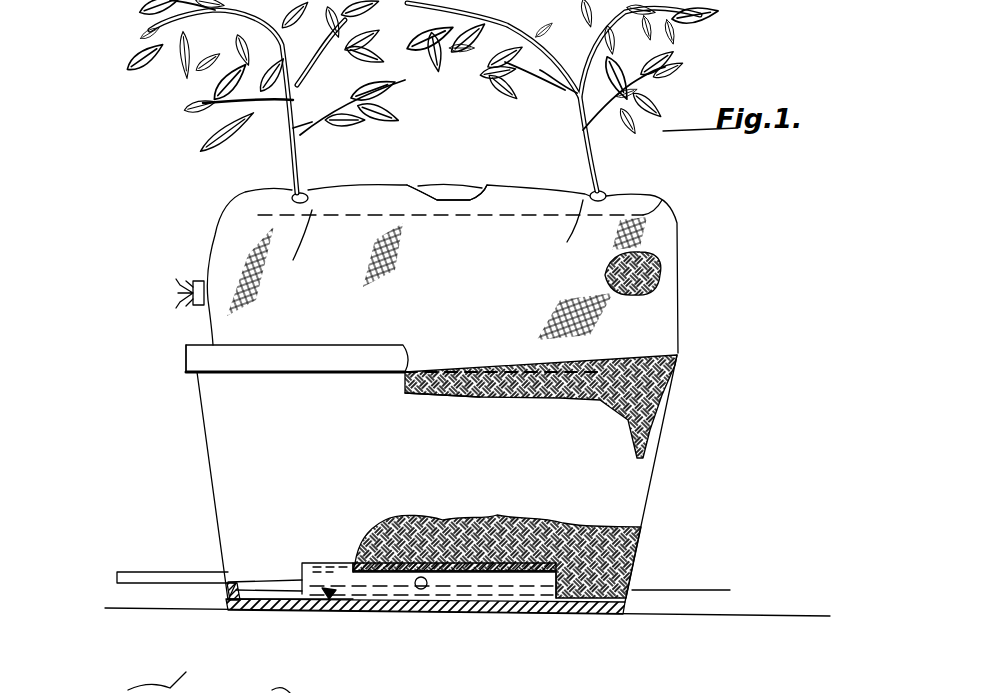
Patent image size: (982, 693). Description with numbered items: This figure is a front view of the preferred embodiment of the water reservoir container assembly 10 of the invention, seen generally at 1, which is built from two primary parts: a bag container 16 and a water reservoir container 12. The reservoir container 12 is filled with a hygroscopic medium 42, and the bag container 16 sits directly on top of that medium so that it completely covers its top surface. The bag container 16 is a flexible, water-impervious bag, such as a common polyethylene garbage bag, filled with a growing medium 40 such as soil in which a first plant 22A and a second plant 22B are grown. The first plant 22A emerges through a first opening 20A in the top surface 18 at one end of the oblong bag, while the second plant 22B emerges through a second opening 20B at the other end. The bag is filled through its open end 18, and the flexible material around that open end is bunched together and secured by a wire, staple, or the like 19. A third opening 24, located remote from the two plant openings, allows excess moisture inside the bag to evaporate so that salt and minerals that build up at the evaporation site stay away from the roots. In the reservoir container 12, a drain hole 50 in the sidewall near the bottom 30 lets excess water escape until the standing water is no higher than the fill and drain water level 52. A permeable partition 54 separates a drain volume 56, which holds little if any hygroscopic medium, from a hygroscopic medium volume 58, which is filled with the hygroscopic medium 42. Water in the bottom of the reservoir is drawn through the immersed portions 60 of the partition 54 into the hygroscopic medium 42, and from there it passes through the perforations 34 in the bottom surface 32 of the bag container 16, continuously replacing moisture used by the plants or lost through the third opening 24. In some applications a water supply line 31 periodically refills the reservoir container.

The planting system 10 is at (95, 219).
The valve 1 is at (166, 297).
The water reservoir container 12 is at (658, 482).
The bag container 16 is at (683, 233).
The top surface 18 is at (278, 203).
The wire, staple, or the like 19 is at (185, 318).
The first opening 20A is at (315, 269).
The second opening 20B is at (576, 278).
The first plant 22A is at (305, 170).
The second plant 22B is at (600, 180).
The third opening 24 is at (448, 185).
The bottom 30 is at (509, 612).
The water supply line 31 is at (95, 576).
The bottom surface 32 is at (597, 366).
The perforations 34 is at (482, 364).
The growing medium 40 is at (645, 280).
The hygroscopic medium 42 is at (612, 546).
The drain hole 50 is at (435, 613).
The fill and drain water level 52 is at (694, 588).
The permeable partition 54 is at (290, 554).
The drain volume 56 is at (336, 600).
The hygroscopic medium volume 58 is at (262, 561).
The immersed portions 60 is at (305, 612).